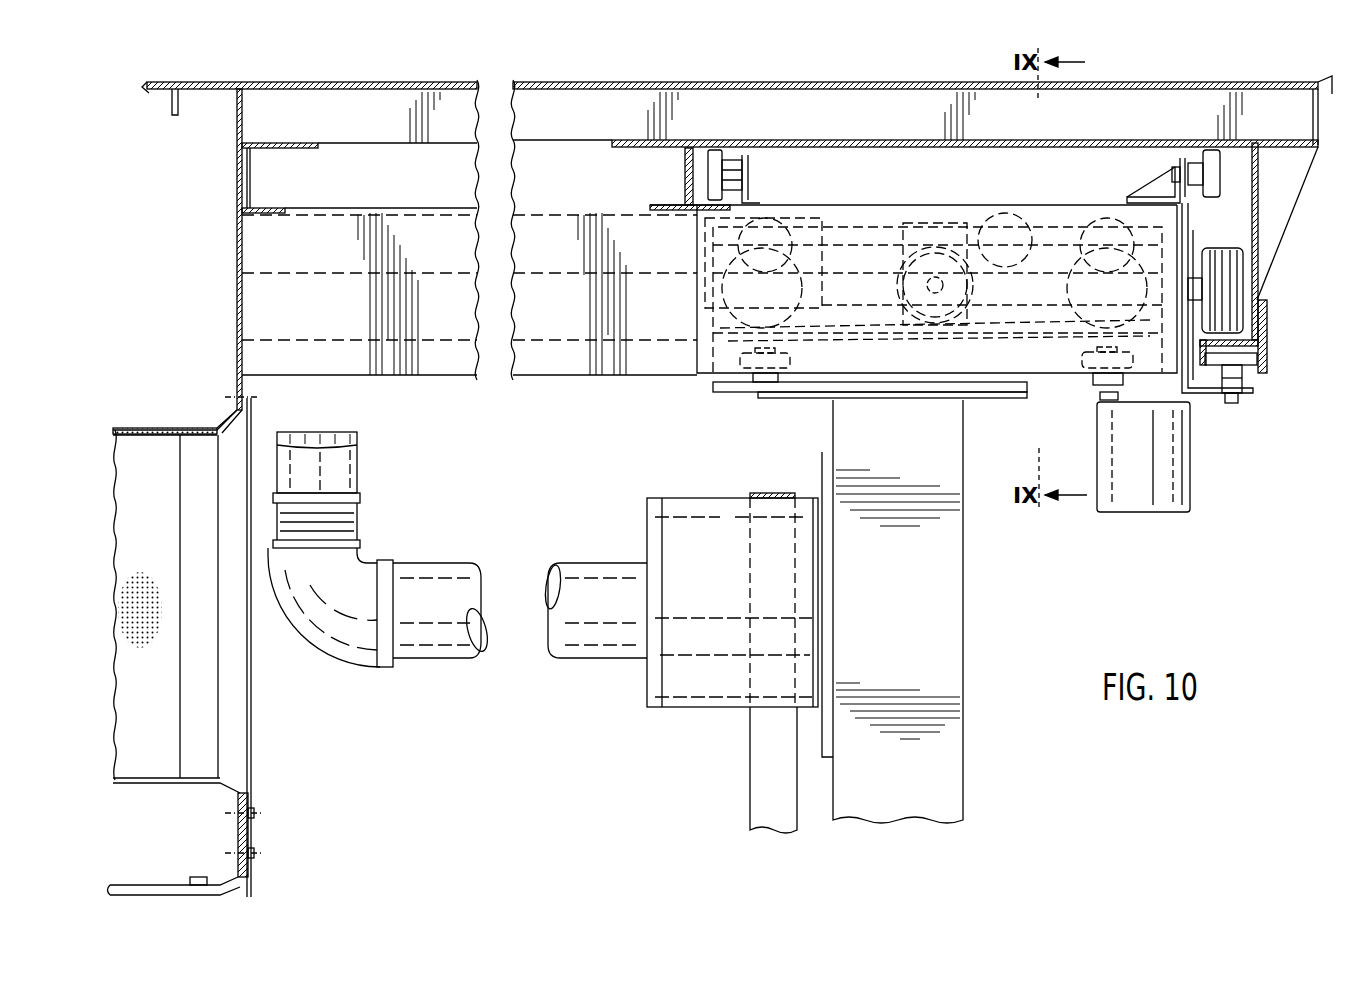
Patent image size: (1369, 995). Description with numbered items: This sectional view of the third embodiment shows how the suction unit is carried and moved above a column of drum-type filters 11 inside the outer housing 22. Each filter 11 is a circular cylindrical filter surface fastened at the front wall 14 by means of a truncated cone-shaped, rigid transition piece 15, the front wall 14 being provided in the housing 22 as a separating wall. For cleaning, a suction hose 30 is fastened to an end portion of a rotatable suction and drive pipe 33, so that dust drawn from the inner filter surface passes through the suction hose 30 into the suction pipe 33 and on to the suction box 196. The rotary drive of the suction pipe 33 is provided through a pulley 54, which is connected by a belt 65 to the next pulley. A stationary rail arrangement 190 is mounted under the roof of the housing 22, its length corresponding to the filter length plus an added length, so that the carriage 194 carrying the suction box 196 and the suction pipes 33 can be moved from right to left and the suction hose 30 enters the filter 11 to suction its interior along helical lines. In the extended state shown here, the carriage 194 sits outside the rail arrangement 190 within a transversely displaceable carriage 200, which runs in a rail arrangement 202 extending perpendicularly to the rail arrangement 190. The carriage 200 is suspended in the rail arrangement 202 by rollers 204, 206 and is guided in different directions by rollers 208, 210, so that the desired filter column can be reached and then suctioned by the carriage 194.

The drum-type filter 11 is at (162, 790).
The front wall 14 is at (237, 310).
The transition piece 15 is at (247, 887).
The outer housing 22 is at (585, 82).
The suction hose 30 is at (373, 496).
The suction and drive pipe 33 is at (440, 648).
The pulley 54 is at (683, 527).
The belt 65 is at (763, 778).
The rail arrangement 190 is at (360, 358).
The carriage 194 is at (787, 405).
The suction box 196 is at (930, 632).
The transversely displaceable carriage 200 is at (952, 198).
The rail arrangement 202 is at (1260, 202).
The roller 204 is at (714, 150).
The roller 206 is at (1207, 252).
The roller 208 is at (1207, 150).
The roller 210 is at (1232, 403).